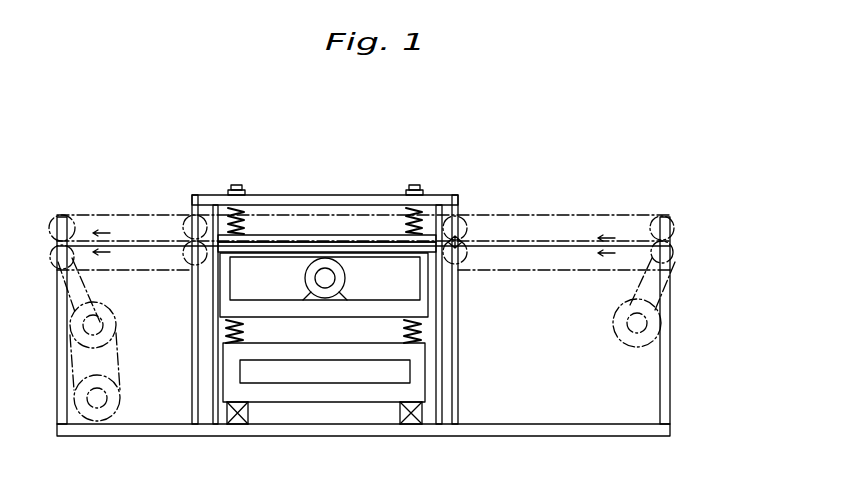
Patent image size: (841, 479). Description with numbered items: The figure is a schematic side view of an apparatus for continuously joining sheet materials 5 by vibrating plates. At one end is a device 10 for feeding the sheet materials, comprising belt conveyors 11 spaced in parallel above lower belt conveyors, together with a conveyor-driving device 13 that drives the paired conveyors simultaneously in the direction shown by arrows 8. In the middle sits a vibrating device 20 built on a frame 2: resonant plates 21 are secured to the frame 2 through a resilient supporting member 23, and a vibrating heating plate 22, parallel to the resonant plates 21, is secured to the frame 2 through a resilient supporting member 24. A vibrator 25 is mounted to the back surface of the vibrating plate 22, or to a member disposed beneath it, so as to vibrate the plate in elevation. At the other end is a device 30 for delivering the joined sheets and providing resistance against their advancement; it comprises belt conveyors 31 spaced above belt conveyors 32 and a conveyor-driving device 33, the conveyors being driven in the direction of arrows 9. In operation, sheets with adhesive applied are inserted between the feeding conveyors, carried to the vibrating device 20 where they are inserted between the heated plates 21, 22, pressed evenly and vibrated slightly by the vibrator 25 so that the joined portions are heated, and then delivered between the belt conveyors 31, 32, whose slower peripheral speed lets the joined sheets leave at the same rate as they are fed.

The frame 2 is at (204, 418).
The sheet materials 5 is at (548, 240).
The arrows 8 is at (490, 198).
The arrows 9 is at (52, 258).
The device for feeding sheet materials 10 is at (689, 208).
The belt conveyors 11 is at (600, 223).
The conveyor-driving device 13 is at (627, 343).
The vibrating device 20 is at (365, 184).
The resonant plates 21 is at (350, 236).
The vibrating heating plate 22 is at (357, 252).
The resilient supporting member 23 is at (247, 225).
The resilient supporting member 24 is at (247, 331).
The vibrator 25 is at (305, 278).
The device for removing the joined sheets 30 is at (176, 187).
The belt conveyors 31 is at (118, 222).
The belt conveyors 32 is at (136, 262).
The conveyor-driving device 33 is at (120, 396).